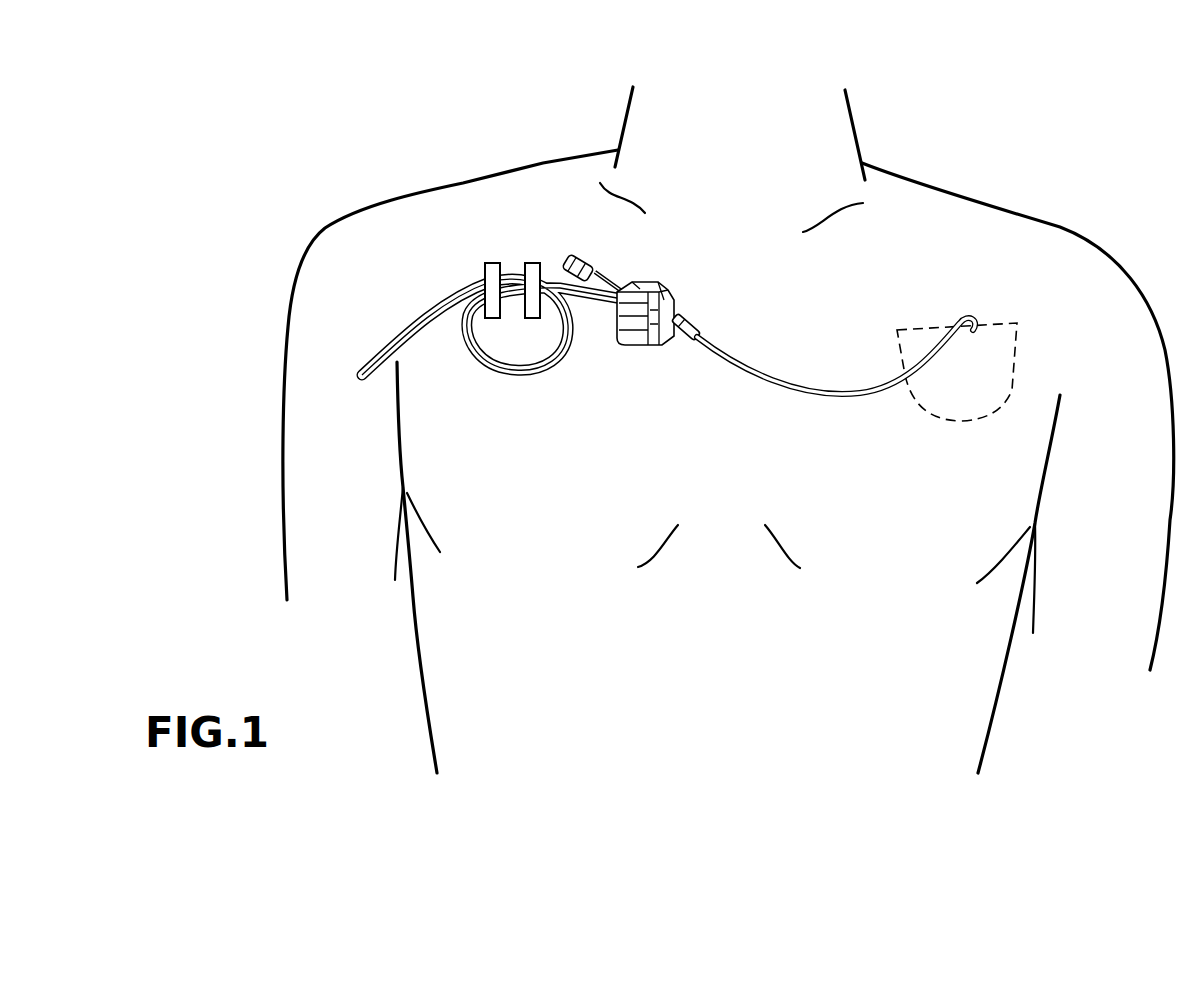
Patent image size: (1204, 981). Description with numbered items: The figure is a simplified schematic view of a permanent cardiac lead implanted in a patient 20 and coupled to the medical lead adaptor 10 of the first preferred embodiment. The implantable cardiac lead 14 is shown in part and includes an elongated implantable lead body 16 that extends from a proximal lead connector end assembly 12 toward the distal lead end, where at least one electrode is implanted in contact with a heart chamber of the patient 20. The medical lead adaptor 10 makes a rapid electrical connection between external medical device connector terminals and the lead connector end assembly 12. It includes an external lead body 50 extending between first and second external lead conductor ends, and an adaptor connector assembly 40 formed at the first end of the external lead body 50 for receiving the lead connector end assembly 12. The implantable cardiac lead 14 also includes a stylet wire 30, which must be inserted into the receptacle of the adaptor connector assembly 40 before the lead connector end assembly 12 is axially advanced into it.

The medical lead adaptor 10 is at (602, 390).
The proximal lead connector end assembly 12 is at (682, 287).
The implantable cardiac lead 14 is at (818, 375).
The implantable lead body 16 is at (865, 396).
The patient 20 is at (1075, 222).
The stylet wire 30 is at (605, 258).
The adaptor connector assembly 40 is at (641, 352).
The external lead body 50 is at (428, 305).